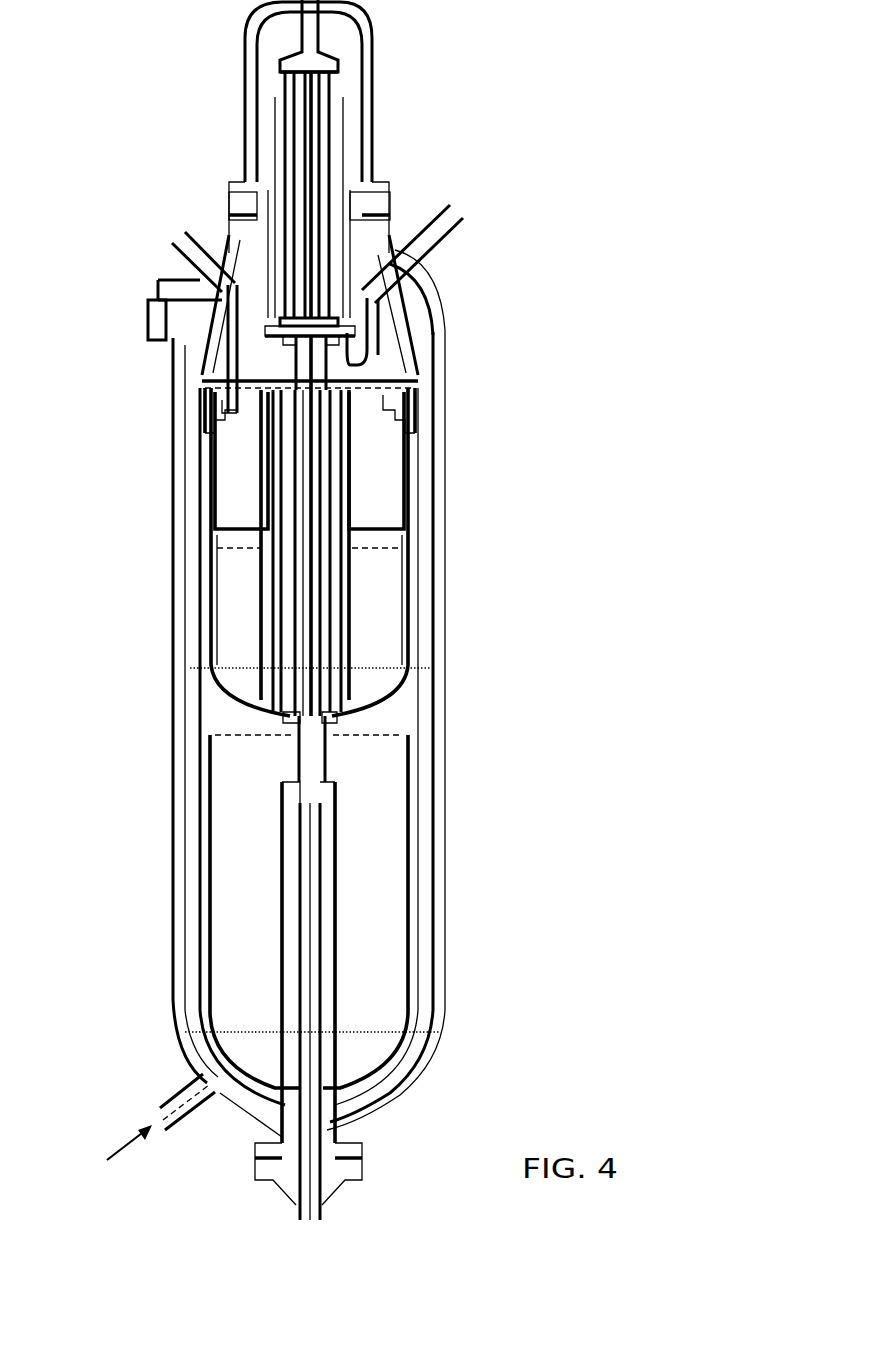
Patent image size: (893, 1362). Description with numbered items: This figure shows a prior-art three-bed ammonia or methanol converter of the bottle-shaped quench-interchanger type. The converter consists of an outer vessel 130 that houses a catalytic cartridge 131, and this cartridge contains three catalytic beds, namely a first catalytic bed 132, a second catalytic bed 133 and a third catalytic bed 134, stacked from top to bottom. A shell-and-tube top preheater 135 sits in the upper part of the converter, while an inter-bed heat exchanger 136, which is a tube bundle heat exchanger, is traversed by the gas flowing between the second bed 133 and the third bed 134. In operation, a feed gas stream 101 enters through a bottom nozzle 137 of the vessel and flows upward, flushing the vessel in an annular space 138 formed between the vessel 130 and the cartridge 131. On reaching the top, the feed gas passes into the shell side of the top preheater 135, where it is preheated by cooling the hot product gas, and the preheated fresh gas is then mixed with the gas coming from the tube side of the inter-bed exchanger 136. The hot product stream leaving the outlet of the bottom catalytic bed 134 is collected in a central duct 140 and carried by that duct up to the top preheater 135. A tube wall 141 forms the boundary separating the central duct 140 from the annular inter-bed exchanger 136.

The feed gas stream 101 is at (104, 1162).
The vessel 130 is at (433, 753).
The catalytic cartridge 131 is at (410, 708).
The first catalytic bed 132 is at (378, 467).
The second catalytic bed 133 is at (372, 593).
The third catalytic bed 134 is at (368, 920).
The shell-and-tube top preheater 135 is at (320, 147).
The inter-bed heat exchanger 136 is at (278, 582).
The bottom nozzle 137 is at (175, 1090).
The annular space 138 is at (190, 922).
The central duct 140 is at (302, 752).
The tube wall 141 is at (295, 660).